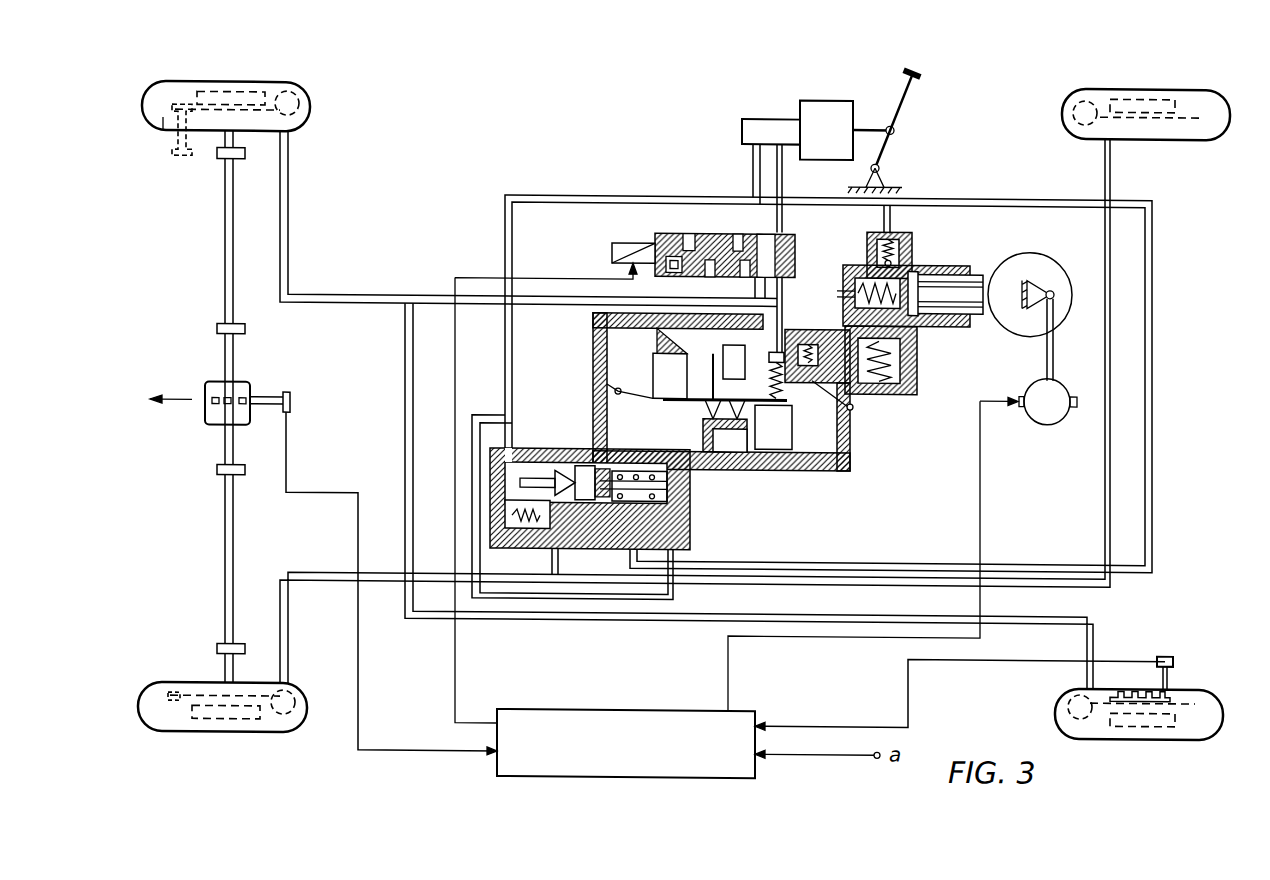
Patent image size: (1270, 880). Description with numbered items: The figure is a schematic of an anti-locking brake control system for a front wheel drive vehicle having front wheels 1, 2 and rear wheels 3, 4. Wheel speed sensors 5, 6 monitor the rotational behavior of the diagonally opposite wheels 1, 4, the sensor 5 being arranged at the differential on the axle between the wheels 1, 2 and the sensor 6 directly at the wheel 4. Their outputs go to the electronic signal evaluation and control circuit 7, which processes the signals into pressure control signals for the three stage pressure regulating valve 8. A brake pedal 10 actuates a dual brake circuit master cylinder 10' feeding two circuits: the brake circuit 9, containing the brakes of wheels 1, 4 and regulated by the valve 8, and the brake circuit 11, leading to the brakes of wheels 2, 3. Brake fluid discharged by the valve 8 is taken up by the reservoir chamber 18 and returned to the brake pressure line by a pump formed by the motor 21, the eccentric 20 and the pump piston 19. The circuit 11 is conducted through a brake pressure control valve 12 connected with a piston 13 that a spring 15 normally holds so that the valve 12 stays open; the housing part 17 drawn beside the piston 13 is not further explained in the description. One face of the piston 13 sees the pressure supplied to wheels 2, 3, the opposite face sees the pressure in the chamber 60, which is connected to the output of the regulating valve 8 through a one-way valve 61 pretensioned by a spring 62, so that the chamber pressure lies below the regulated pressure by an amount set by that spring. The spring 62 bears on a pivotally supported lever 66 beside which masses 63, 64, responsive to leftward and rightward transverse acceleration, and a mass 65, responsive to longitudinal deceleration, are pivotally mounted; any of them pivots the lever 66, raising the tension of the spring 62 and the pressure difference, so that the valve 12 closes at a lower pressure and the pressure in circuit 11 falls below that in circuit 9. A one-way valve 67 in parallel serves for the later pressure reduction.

The front wheel 1 is at (163, 132).
The front wheel 2 is at (180, 693).
The rear wheel 3 is at (1190, 128).
The rear wheel 4 is at (1195, 690).
The wheel speed sensor 5 is at (292, 396).
The wheel speed sensor 6 is at (1168, 652).
The electronic evaluation and control circuit 7 is at (617, 709).
The pressure regulating valve 8 is at (663, 232).
The brake circuit 9 is at (783, 170).
The brake pedal 10 is at (877, 131).
The dual brake circuit master cylinder 10' is at (771, 138).
The brake circuit 11 is at (545, 195).
The brake pressure control valve 12 is at (556, 482).
The piston 13 is at (565, 448).
The spring 15 is at (592, 440).
The piston 17 is at (686, 502).
The reservoir chamber 18 is at (917, 378).
The pump piston 19 is at (957, 312).
The eccentric 20 is at (1047, 270).
The motor 21 is at (1055, 420).
The chamber 60 is at (835, 446).
The one-way valve 61 is at (780, 332).
The spring 62 is at (787, 372).
The mass 63 is at (660, 372).
The mass 64 is at (792, 430).
The mass 65 is at (725, 357).
The lever 66 is at (751, 442).
The one-way valve 67 is at (853, 407).